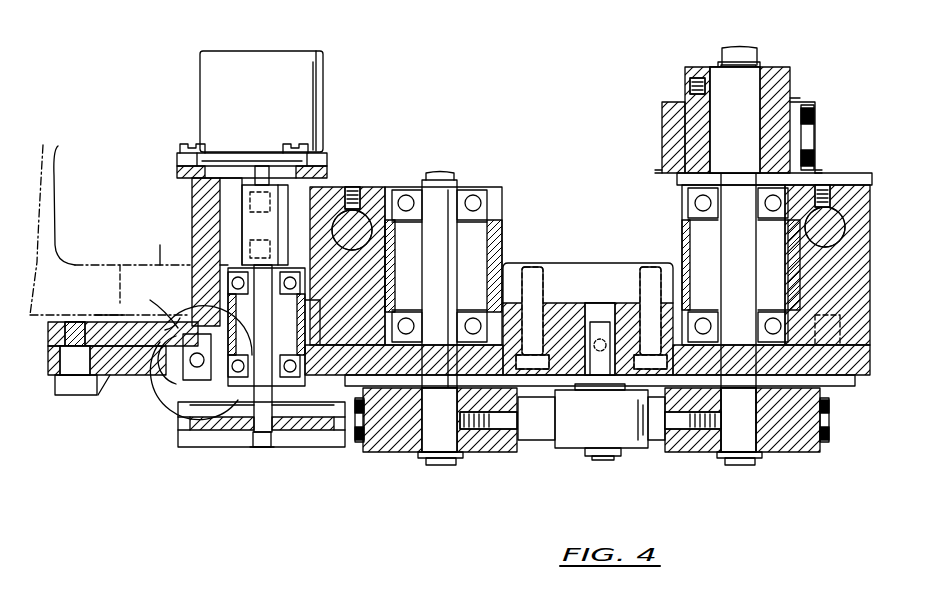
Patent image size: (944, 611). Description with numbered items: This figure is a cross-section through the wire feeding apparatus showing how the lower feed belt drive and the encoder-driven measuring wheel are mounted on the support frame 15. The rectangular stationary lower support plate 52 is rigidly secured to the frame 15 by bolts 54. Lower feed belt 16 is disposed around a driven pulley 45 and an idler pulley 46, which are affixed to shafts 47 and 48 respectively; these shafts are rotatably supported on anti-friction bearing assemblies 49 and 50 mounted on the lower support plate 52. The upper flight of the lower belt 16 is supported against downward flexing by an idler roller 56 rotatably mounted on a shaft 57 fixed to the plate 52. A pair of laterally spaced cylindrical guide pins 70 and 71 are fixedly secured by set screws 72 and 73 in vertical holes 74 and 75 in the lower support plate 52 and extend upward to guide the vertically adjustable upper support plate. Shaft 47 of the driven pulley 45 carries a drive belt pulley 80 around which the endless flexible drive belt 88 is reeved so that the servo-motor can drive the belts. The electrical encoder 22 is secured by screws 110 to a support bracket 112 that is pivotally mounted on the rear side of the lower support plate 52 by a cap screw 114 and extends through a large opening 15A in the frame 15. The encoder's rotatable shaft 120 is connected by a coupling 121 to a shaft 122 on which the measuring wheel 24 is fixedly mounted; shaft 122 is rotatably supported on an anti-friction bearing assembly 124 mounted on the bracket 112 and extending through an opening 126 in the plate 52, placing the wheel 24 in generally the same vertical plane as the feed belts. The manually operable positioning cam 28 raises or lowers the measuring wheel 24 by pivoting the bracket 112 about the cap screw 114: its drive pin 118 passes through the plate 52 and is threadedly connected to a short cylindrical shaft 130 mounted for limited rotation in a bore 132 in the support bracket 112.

The support frame 15 is at (110, 262).
The large opening in frame 15A is at (121, 262).
The lower feed belt 16 is at (359, 444).
The electrical encoder 22 is at (261, 101).
The measuring wheel 24 is at (178, 447).
The positioning cam 28 is at (145, 392).
The driven pulley 45 is at (790, 452).
The idler pulley 46 is at (503, 452).
The shaft 47 is at (742, 466).
The shaft 48 is at (440, 466).
The anti-friction bearing assembly 49 is at (688, 193).
The anti-friction bearing assembly 50 is at (502, 191).
The lower support plate 52 is at (110, 386).
The bolts 54 is at (538, 268).
The idler roller 56 is at (568, 440).
The shaft 57 is at (602, 322).
The cylindrical guide pin 70 is at (845, 222).
The cylindrical guide pin 71 is at (372, 200).
The set screw 72 is at (828, 185).
The set screw 73 is at (358, 186).
The vertical hole 74 is at (845, 232).
The vertical hole 75 is at (363, 250).
The drive belt pulley 80 is at (796, 102).
The drive belt 88 is at (816, 129).
The screws 110 is at (185, 144).
The support bracket 112 is at (107, 315).
The cap screw 114 is at (72, 388).
The drive pin 118 is at (188, 392).
The rotatable shaft 120 is at (258, 175).
The coupling 121 is at (242, 204).
The shaft 122 is at (266, 448).
The anti-friction bearing assembly 124 is at (300, 386).
The opening in lower support plate 126 is at (165, 390).
The short cylindrical shaft 130 is at (180, 300).
The bore in support bracket 132 is at (165, 322).